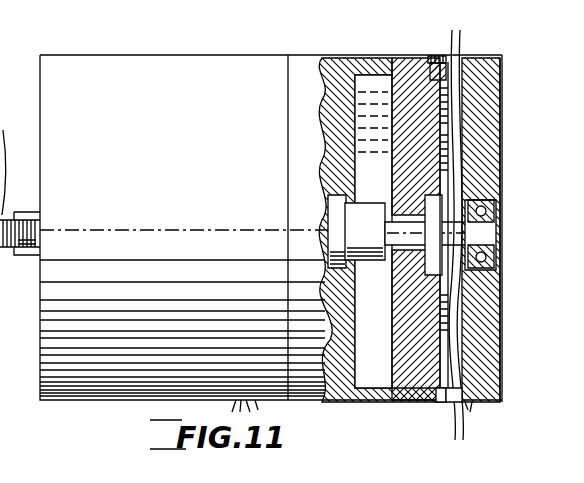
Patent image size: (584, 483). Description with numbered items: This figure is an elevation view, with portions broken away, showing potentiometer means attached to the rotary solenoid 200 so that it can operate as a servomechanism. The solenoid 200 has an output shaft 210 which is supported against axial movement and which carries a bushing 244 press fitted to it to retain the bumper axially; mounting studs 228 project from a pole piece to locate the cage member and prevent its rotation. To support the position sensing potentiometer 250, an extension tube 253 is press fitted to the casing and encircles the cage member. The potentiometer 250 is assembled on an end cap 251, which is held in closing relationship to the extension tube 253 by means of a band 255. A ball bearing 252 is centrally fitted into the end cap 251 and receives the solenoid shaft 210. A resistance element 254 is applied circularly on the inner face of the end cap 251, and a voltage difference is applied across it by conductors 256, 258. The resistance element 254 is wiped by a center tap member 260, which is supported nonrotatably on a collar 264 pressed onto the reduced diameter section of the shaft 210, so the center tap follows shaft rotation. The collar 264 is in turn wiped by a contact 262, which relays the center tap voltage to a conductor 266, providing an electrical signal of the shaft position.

The rotary solenoid 200 is at (137, 52).
The output shaft 210 is at (27, 212).
The mounting studs 228 is at (30, 254).
The bushing 244 is at (391, 270).
The potentiometer 250 is at (480, 58).
The end cap 251 is at (487, 66).
The ball bearing 252 is at (474, 404).
The extension tube 253 is at (358, 38).
The resistance element 254 is at (458, 318).
The band 255 is at (428, 404).
The conductor 256 is at (450, 408).
The conductor 258 is at (470, 36).
The center tap member 260 is at (452, 290).
The contact 262 is at (405, 174).
The collar 264 is at (438, 255).
The conductor 266 is at (447, 37).